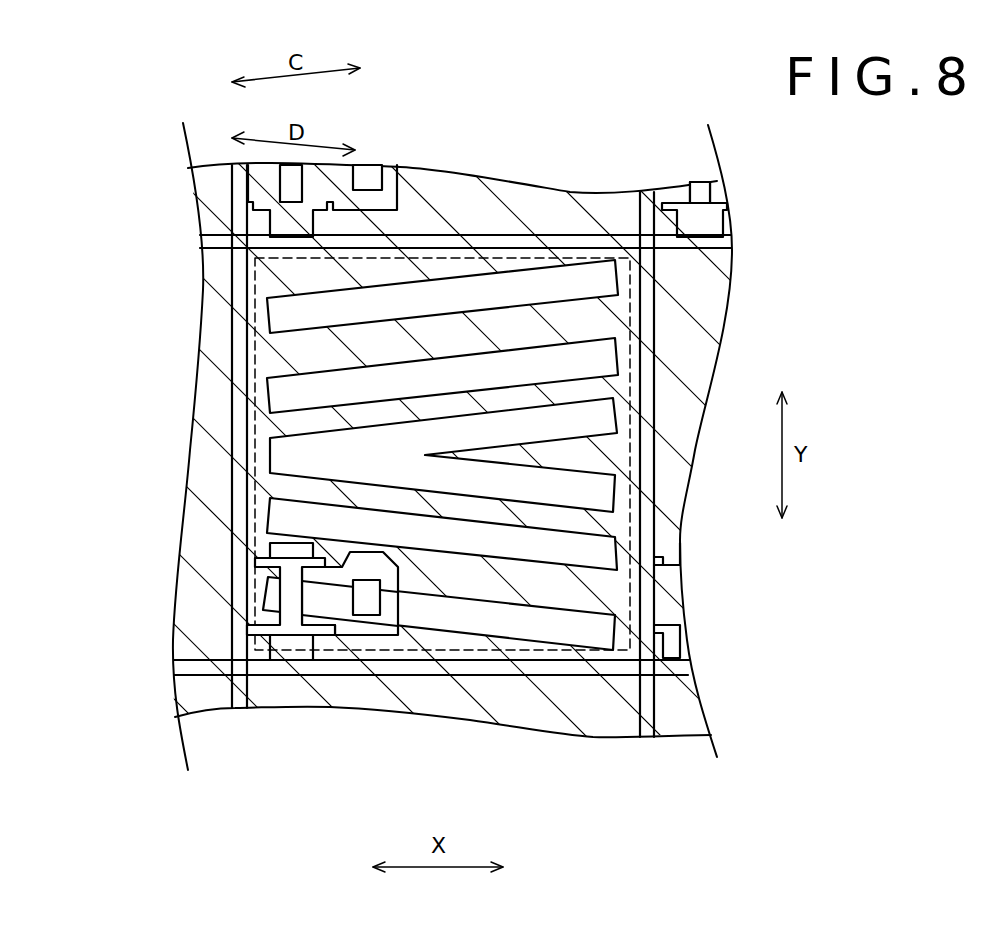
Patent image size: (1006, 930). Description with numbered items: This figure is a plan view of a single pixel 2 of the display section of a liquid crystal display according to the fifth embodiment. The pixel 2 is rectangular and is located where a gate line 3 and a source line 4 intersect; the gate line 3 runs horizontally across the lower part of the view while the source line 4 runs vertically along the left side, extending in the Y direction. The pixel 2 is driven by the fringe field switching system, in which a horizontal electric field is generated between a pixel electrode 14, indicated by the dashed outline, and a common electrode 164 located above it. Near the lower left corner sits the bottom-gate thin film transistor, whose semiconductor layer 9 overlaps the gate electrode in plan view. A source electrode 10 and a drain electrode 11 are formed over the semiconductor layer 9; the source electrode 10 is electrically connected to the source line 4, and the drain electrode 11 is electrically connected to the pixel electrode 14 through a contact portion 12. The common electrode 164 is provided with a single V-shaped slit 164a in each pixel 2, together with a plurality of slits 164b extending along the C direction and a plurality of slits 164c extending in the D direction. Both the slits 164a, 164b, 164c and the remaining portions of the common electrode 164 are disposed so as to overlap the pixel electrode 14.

The pixel 2 is at (505, 592).
The gate line 3 is at (433, 665).
The source line 4 is at (238, 688).
The semiconductor layer 9 is at (288, 620).
The source electrode 10 is at (260, 615).
The drain electrode 11 is at (327, 610).
The contact portion 12 is at (370, 603).
The pixel electrode 14 is at (565, 257).
The common electrode 164 is at (433, 268).
The V-shaped slit 164a is at (312, 473).
The slit extending along the C-direction 164b is at (307, 378).
The slit extending in the D-direction 164c is at (307, 533).